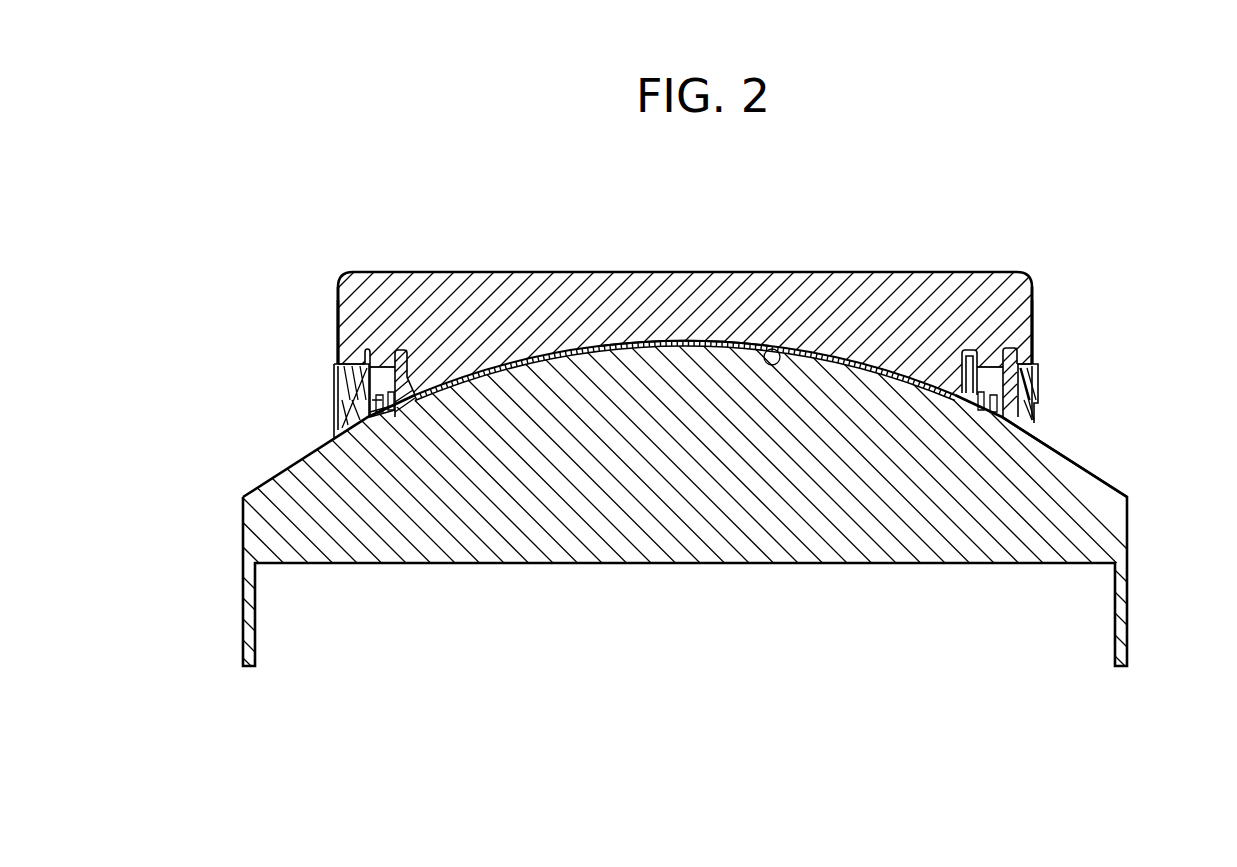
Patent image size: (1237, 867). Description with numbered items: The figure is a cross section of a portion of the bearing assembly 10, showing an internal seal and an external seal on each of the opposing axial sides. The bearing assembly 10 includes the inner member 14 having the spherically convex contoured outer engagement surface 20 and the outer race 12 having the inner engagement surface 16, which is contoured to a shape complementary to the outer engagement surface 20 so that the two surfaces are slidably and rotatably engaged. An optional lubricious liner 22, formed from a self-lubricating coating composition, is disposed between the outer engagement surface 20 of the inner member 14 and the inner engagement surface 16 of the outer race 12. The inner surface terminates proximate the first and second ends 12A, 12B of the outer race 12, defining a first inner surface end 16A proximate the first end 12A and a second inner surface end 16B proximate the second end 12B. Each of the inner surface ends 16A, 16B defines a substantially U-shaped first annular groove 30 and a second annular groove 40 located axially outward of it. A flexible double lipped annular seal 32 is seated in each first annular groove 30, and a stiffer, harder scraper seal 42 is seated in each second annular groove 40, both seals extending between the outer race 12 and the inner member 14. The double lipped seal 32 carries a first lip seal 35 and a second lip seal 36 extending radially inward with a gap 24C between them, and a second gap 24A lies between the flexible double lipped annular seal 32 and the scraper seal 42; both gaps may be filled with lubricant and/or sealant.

The bearing assembly 10 is at (1010, 221).
The outer race 12 is at (1033, 337).
The first end of the outer race 12A is at (338, 318).
The second end of the outer race 12B is at (1038, 346).
The inner member 14 is at (1105, 508).
The inner engagement surface 16 is at (778, 350).
The first inner surface end 16A is at (362, 345).
The second inner surface end 16B is at (962, 345).
The outer engagement surface 20 is at (1075, 462).
The lubricious liner 22 is at (670, 342).
The second gap 24A is at (363, 408).
The gap 24C is at (388, 408).
The first annular groove 30 is at (372, 354).
The flexible double lipped annular seal 32 is at (409, 362).
The first lip seal 35 is at (398, 402).
The second lip seal 36 is at (397, 410).
The second annular groove 40 is at (360, 348).
The scraper seal 42 is at (334, 380).